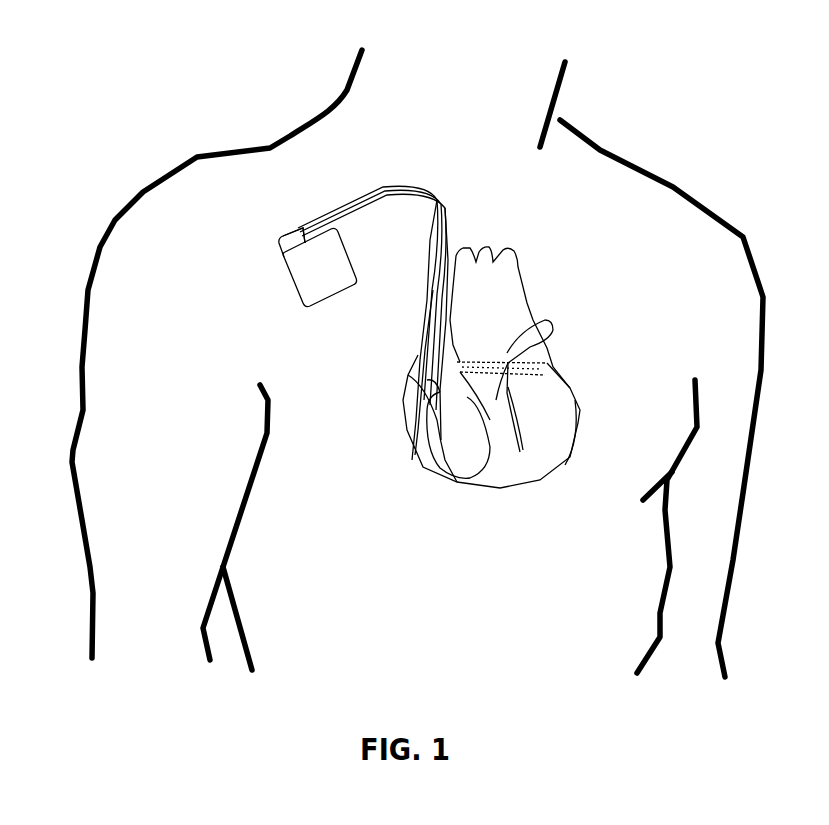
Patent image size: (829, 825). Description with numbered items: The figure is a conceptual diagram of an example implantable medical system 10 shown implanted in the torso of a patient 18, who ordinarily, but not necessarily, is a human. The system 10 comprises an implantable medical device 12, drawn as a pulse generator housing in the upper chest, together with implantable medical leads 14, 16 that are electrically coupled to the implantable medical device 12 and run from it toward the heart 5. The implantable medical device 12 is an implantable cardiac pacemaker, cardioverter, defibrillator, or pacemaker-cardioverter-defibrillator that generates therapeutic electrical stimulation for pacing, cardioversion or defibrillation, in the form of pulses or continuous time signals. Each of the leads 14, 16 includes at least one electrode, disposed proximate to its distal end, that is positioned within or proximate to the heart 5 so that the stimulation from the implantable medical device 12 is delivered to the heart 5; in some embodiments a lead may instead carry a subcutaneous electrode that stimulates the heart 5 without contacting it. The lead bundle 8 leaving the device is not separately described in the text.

The implantable medical system 10 is at (98, 116).
The patient 18 is at (605, 148).
The implantable medical device 12 is at (295, 282).
The leads 8 is at (387, 188).
The implantable medical lead 14 is at (442, 203).
The implantable medical lead 16 is at (432, 240).
The heart 5 is at (565, 395).